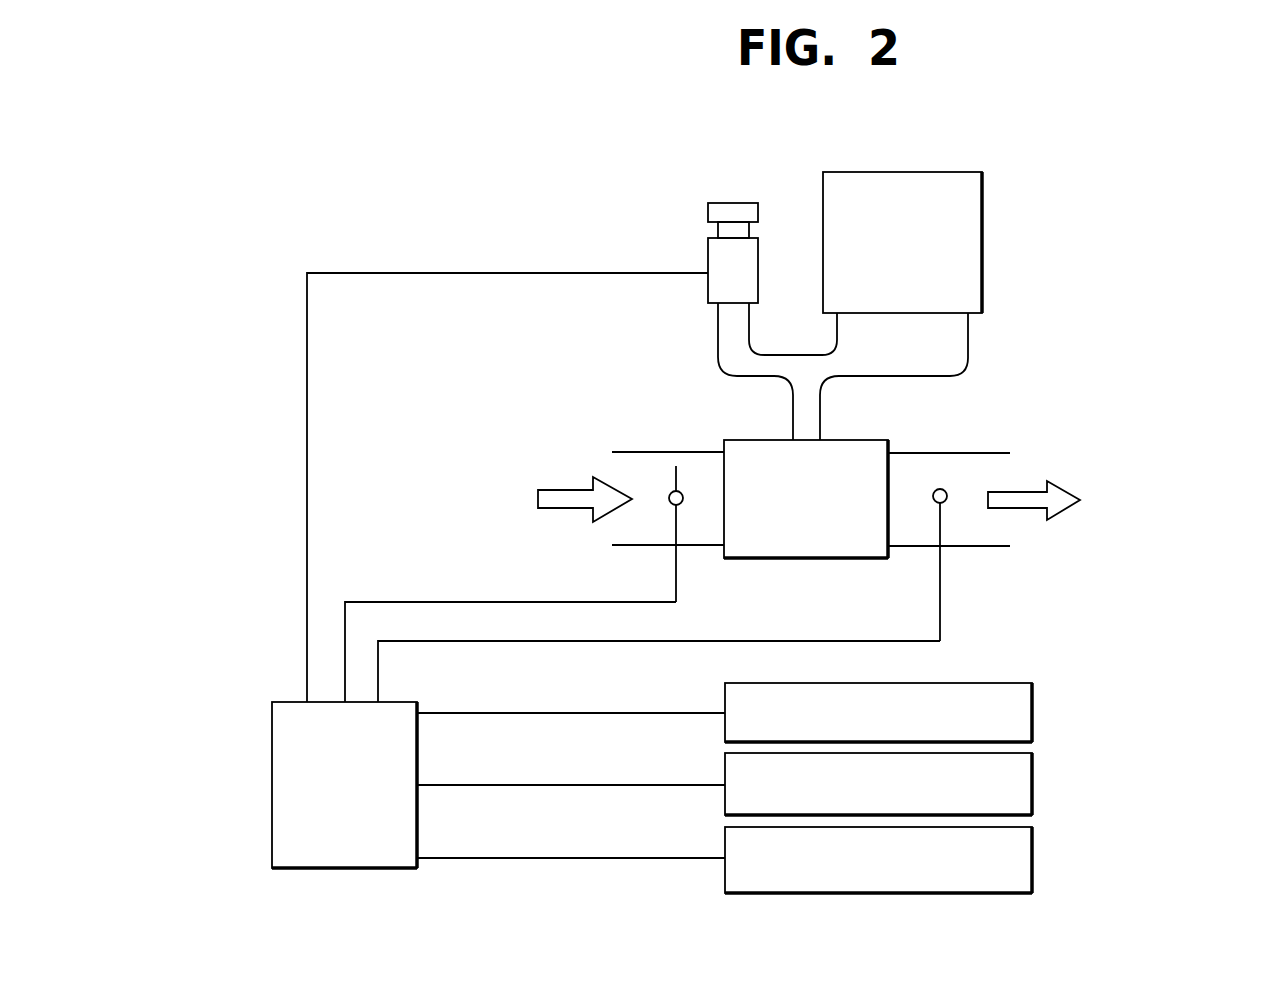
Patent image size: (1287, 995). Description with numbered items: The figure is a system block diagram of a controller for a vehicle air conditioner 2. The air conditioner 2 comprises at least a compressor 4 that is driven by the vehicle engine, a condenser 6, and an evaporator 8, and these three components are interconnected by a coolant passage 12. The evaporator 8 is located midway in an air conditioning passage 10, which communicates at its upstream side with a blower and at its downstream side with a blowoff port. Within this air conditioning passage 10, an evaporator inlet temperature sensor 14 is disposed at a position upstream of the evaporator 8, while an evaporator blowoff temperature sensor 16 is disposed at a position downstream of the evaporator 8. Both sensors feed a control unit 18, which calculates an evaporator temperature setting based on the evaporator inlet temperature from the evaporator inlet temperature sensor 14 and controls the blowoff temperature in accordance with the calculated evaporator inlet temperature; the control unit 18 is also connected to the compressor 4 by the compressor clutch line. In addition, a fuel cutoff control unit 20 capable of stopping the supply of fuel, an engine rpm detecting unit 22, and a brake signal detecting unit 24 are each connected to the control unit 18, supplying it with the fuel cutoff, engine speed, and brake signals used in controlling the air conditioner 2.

The air conditioner 2 is at (859, 276).
The compressor 4 is at (730, 262).
The condenser 6 is at (902, 183).
The evaporator 8 is at (860, 448).
The air conditioning passage 10 is at (635, 469).
The coolant passage 12 is at (968, 342).
The evaporator inlet temperature sensor 14 is at (676, 466).
The evaporator blowoff temperature sensor 16 is at (946, 492).
The control unit 18 is at (285, 750).
The fuel cutoff control unit 20 is at (1012, 793).
The engine rpm detecting unit 22 is at (1012, 870).
The brake signal detecting unit 24 is at (1026, 717).